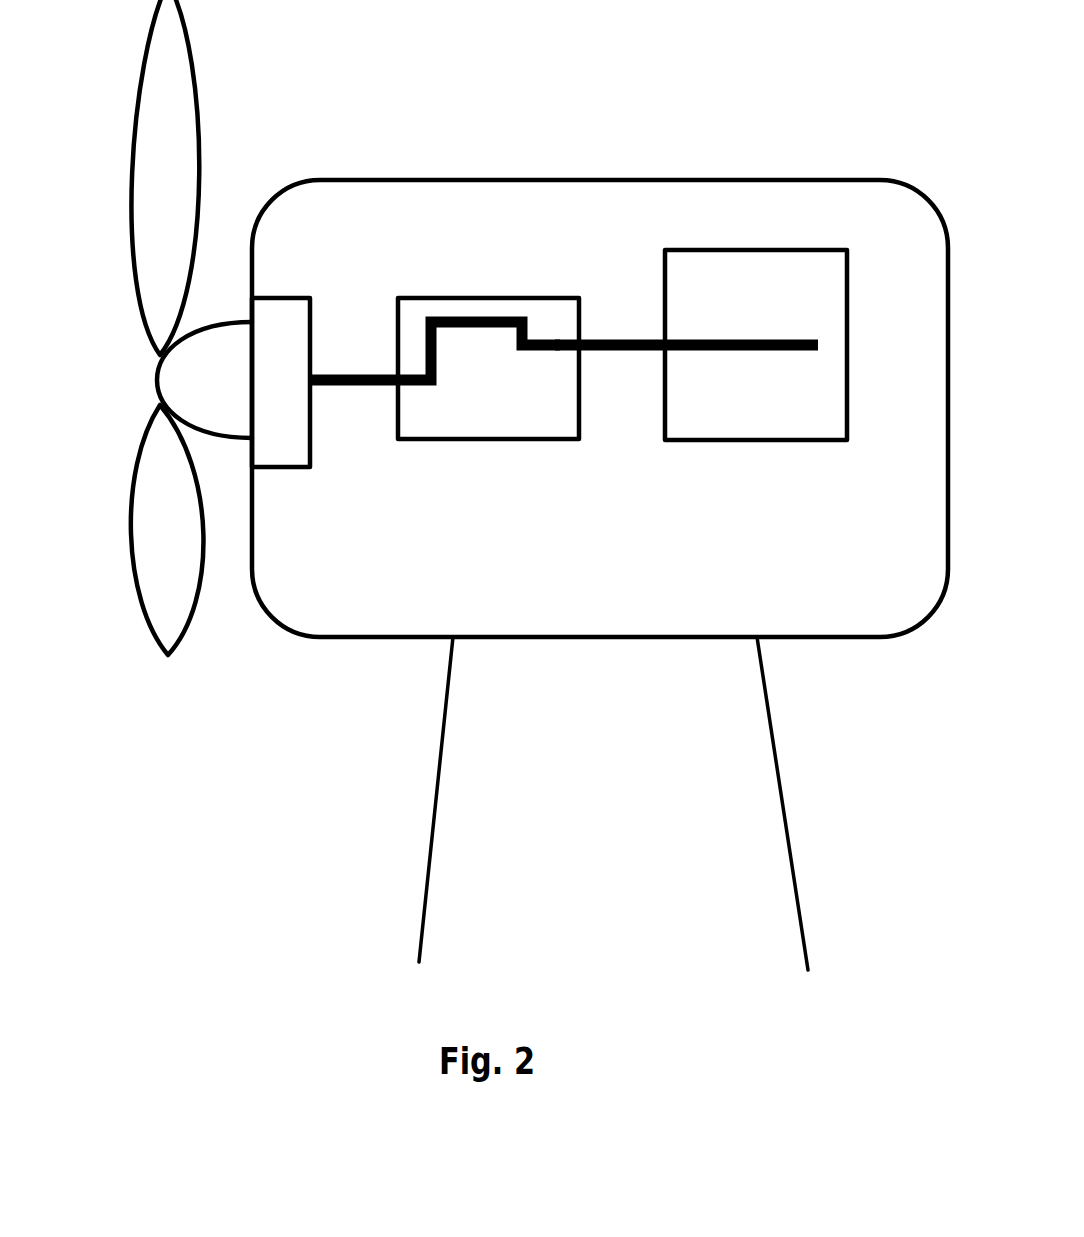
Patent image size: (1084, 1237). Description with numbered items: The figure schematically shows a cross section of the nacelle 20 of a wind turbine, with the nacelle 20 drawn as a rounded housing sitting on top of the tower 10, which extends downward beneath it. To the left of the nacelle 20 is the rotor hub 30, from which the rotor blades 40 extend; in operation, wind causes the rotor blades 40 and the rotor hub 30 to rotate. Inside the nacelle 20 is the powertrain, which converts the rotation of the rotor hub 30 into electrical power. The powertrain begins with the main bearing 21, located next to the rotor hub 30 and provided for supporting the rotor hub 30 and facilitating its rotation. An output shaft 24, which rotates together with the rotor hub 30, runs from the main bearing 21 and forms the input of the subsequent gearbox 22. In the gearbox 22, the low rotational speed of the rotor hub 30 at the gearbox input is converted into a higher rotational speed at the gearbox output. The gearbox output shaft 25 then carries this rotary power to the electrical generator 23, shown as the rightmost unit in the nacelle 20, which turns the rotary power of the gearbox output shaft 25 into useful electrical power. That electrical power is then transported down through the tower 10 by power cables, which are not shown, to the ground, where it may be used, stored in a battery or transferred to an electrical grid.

The tower 10 is at (776, 775).
The nacelle 20 is at (598, 180).
The main bearing 21 is at (280, 297).
The gearbox 22 is at (487, 298).
The electrical generator 23 is at (755, 250).
The output shaft 24 is at (335, 390).
The gearbox output shaft 25 is at (600, 352).
The rotor hub 30 is at (155, 383).
The rotor blades 40 is at (193, 47).